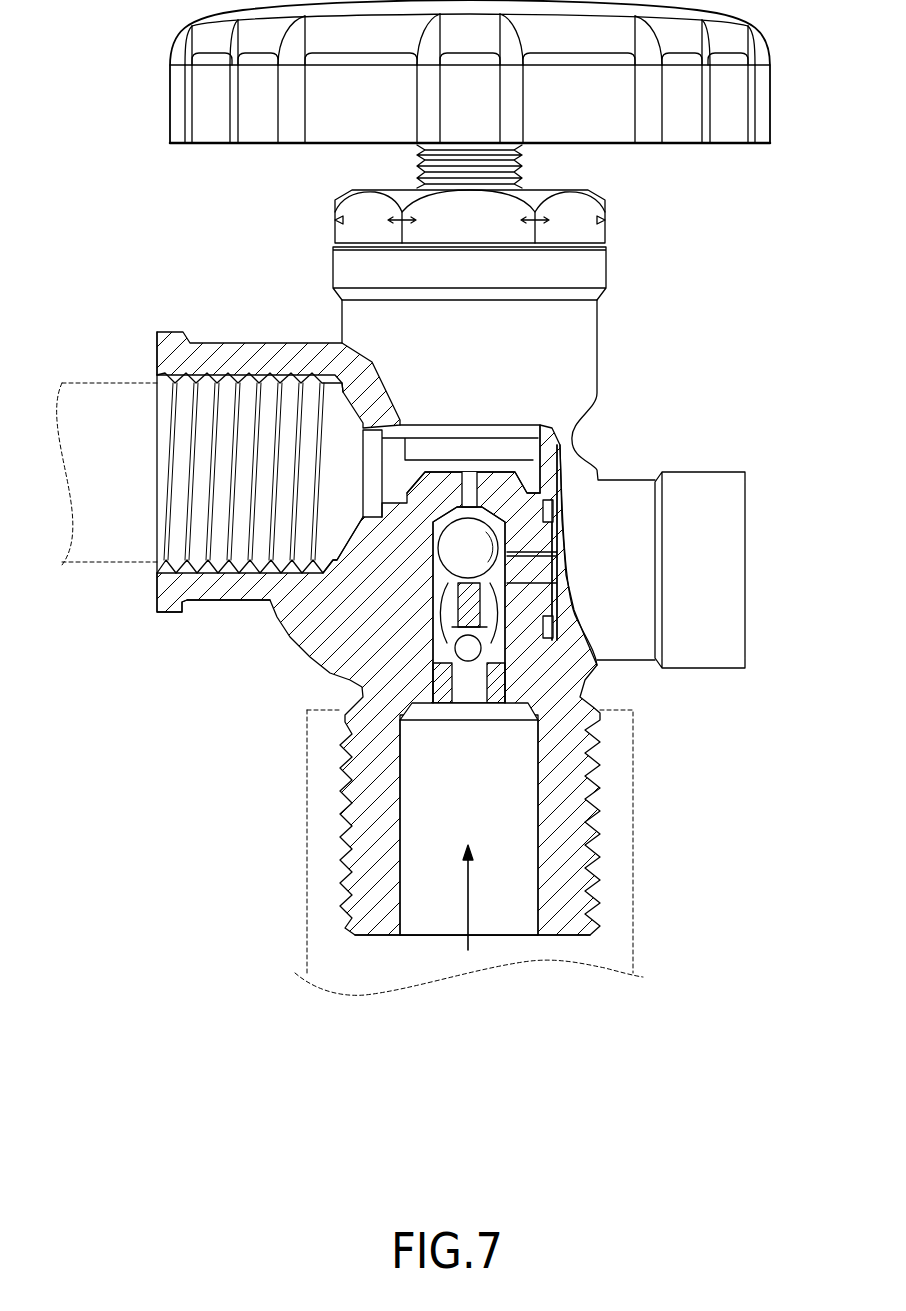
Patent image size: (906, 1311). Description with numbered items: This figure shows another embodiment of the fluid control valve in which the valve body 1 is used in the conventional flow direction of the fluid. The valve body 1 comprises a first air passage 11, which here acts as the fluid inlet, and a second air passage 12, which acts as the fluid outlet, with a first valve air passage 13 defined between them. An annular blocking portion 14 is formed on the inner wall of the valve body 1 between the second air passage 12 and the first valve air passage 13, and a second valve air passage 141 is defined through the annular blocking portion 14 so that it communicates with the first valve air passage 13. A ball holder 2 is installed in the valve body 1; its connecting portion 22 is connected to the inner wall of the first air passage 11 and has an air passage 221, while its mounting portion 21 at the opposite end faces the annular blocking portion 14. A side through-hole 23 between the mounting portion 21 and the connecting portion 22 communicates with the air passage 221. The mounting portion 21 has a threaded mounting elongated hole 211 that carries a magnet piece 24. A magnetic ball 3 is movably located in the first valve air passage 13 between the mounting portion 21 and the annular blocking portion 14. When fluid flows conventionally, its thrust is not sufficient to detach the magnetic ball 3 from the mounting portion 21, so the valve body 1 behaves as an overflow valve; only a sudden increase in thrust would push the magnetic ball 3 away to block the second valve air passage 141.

The valve body 1 is at (655, 437).
The first air passage 11 is at (593, 942).
The second air passage 12 is at (117, 333).
The first valve air passage 13 is at (480, 585).
The annular blocking portion 14 is at (520, 472).
The second valve air passage 141 is at (468, 498).
The ball holder 2 is at (437, 705).
The mounting portion 21 is at (452, 608).
The mounting elongated hole 211 is at (458, 586).
The connecting portion 22 is at (560, 715).
The air passage 221 is at (490, 707).
The side through-hole 23 is at (487, 655).
The magnet piece 24 is at (556, 610).
The magnetic ball 3 is at (563, 557).